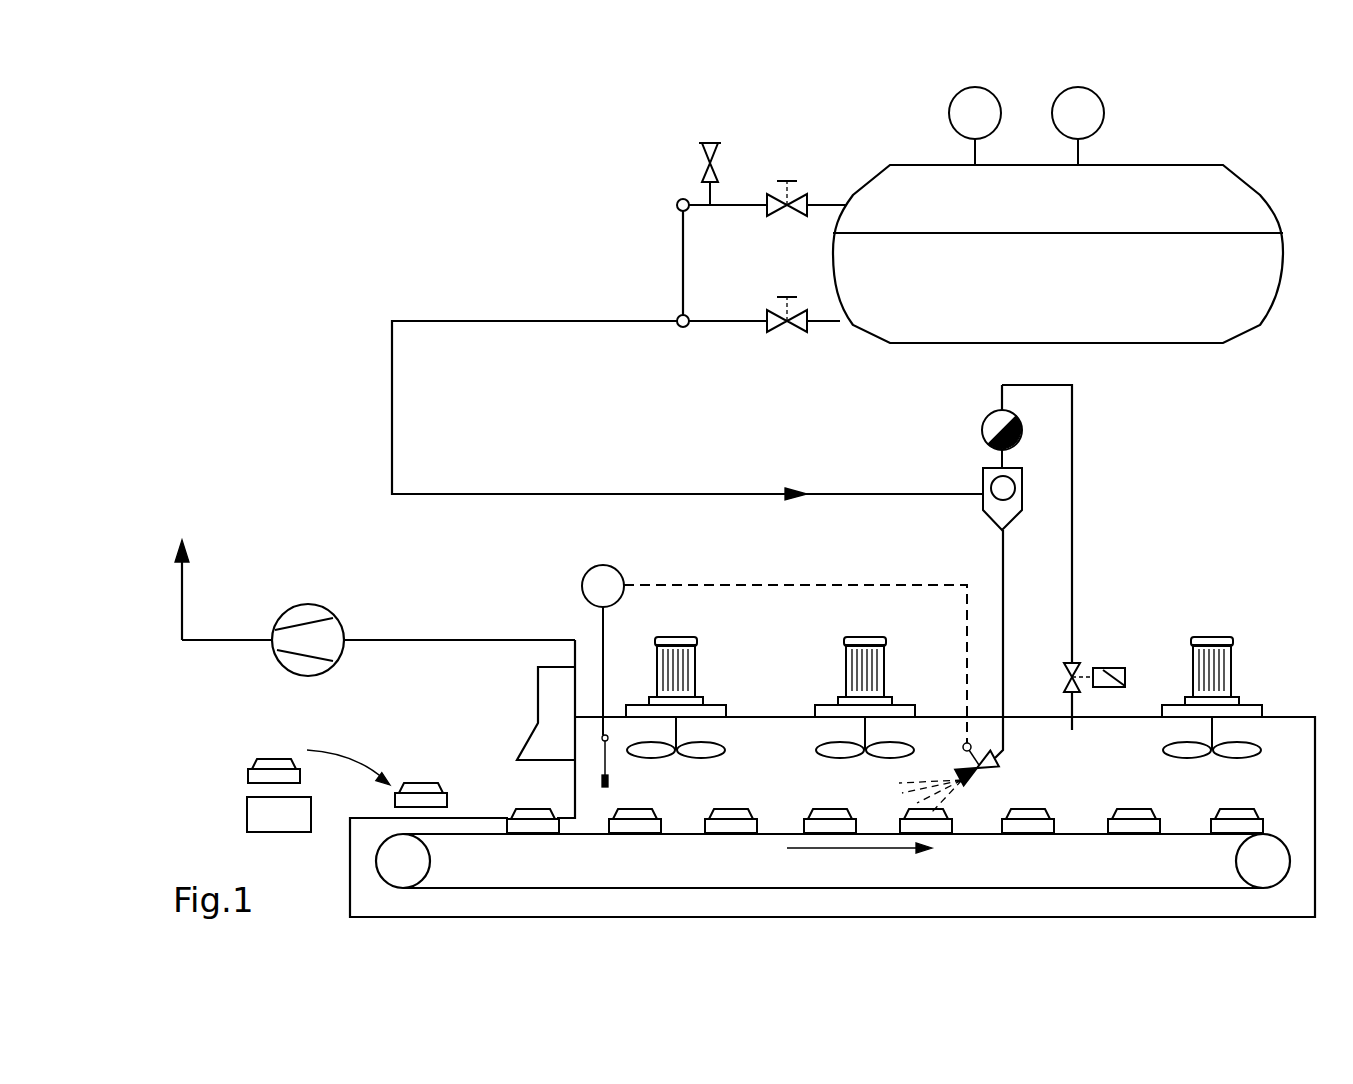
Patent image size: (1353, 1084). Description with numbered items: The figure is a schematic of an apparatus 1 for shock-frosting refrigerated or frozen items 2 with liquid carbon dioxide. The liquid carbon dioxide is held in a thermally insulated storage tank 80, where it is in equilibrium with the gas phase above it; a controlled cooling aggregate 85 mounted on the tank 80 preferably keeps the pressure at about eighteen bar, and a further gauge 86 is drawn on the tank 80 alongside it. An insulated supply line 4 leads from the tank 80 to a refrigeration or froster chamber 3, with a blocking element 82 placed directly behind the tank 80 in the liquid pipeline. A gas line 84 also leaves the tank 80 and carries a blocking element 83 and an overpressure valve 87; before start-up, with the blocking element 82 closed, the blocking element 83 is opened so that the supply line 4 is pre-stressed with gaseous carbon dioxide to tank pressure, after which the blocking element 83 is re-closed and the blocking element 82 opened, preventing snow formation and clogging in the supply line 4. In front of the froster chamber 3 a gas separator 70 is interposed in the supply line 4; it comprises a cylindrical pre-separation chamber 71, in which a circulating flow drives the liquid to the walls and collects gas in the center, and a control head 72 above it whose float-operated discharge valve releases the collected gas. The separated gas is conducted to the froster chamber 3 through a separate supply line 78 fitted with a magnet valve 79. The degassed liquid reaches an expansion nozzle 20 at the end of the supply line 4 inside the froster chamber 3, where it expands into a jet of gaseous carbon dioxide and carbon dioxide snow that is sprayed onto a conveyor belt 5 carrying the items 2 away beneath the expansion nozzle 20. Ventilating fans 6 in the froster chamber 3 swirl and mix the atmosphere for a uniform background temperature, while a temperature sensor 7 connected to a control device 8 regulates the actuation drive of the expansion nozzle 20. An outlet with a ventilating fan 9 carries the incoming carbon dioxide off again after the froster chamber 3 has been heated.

The apparatus 1 is at (237, 360).
The refrigerated or frozen items 2 is at (256, 765).
The refrigeration or froster chamber 3 is at (1283, 717).
The supply line 4 is at (583, 494).
The conveyor belt 5 is at (1277, 833).
The ventilating fans 6 is at (708, 713).
The temperature sensor 7 is at (612, 787).
The control device 8 is at (756, 657).
The ventilating fan 9 is at (375, 608).
The expansion nozzle 20 is at (985, 770).
The gas separator 70 is at (963, 453).
The pre-separation chamber 71 is at (988, 487).
The control head 72 is at (985, 418).
The separate supply line 78 is at (1072, 470).
The magnet valve 79 is at (1068, 676).
The storage tank 80 is at (1285, 233).
The blocking element 82 is at (790, 325).
The blocking element 83 is at (797, 197).
The gas line 84 is at (744, 205).
The controlled cooling aggregate 85 is at (1065, 128).
The level gauge 86 is at (962, 128).
The overpressure valve 87 is at (704, 160).